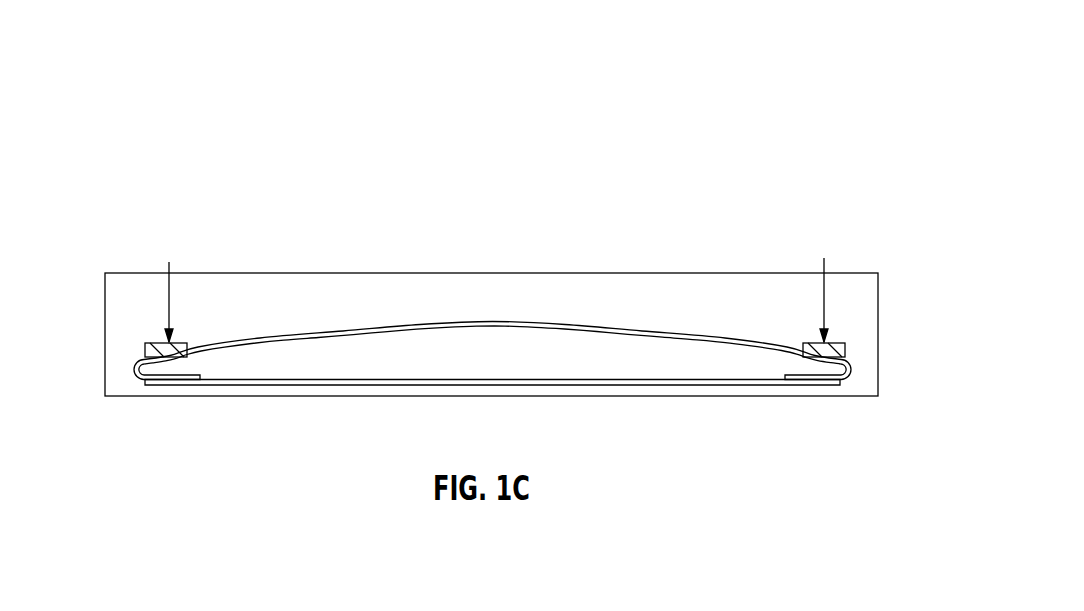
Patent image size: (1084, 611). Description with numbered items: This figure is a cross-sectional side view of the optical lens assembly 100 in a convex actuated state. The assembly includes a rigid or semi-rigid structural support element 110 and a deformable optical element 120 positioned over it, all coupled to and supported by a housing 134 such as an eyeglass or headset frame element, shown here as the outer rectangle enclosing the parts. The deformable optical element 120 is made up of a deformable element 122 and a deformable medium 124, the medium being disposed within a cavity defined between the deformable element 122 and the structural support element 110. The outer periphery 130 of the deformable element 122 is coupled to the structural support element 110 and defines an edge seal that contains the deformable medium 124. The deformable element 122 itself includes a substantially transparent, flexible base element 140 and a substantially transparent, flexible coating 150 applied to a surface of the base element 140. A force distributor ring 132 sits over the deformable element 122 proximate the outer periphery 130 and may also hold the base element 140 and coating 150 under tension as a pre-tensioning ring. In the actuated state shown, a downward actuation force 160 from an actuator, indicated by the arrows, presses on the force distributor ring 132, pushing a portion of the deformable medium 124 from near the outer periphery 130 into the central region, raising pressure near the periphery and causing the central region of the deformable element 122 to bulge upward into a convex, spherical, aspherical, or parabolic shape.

The optical lens assembly 100 is at (170, 111).
The structural support element 110 is at (275, 385).
The deformable optical element 120 is at (603, 192).
The deformable element 122 is at (343, 331).
The deformable medium 124 is at (525, 342).
The outer periphery 130 is at (136, 370).
The force distributor ring 132 is at (147, 352).
The housing 134 is at (879, 322).
The base element 140 is at (745, 351).
The coating 150 is at (785, 347).
The actuation force 160 is at (169, 262).